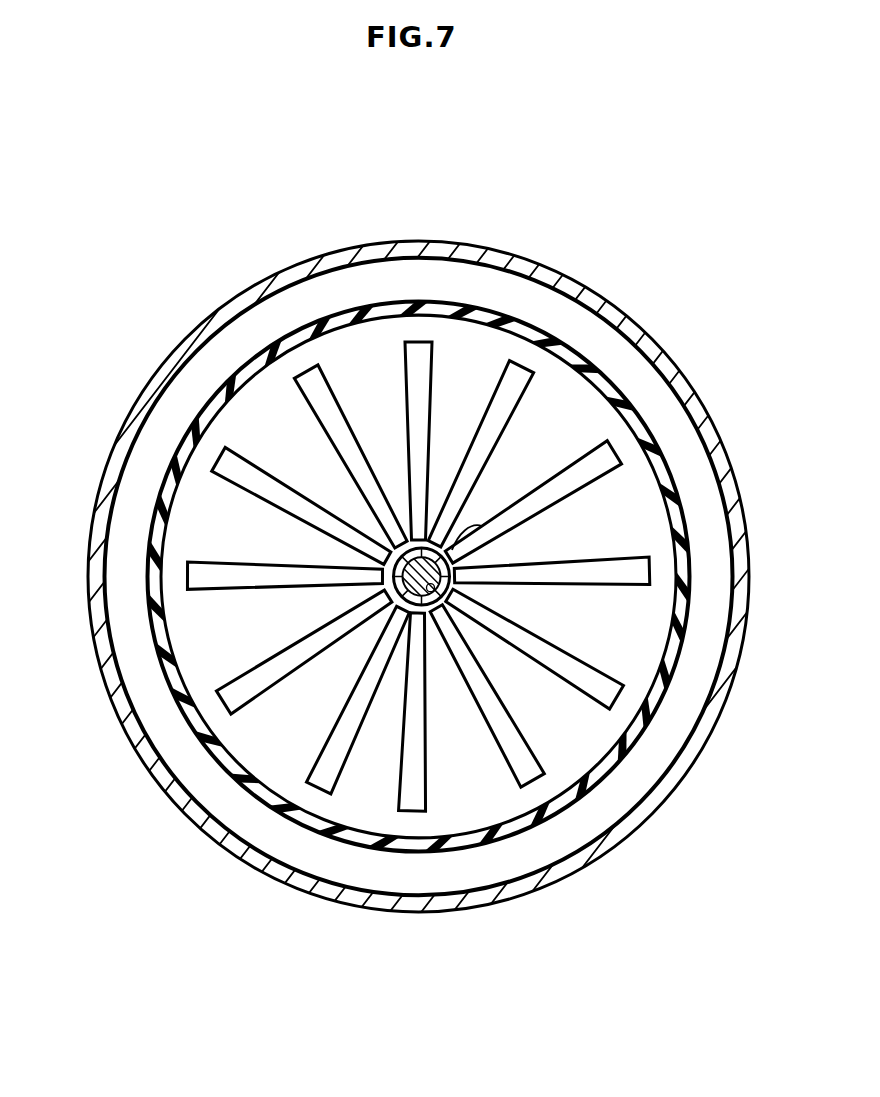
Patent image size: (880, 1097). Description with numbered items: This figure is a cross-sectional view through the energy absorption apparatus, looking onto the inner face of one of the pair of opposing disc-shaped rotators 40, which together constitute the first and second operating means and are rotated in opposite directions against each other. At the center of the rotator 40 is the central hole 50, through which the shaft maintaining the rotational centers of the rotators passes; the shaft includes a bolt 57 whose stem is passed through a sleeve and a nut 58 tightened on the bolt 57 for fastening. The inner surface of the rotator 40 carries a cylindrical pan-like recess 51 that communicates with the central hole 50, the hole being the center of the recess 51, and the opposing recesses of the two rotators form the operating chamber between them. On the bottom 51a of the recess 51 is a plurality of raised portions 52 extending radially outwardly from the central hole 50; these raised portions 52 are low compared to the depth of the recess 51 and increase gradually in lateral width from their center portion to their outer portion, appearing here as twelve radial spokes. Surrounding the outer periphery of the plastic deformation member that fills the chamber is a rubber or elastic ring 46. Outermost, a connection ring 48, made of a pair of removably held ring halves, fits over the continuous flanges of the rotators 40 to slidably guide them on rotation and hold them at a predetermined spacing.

The rotator 40 is at (440, 572).
The connection ring 48 is at (552, 278).
The elastic ring 46 is at (187, 432).
The pan-like recess 51 is at (618, 495).
The bottom of the recess 51a is at (258, 646).
The raised portion 52 is at (478, 452).
The bolt 57 is at (391, 556).
The central hole 50 is at (455, 596).
The nut 58 is at (482, 526).